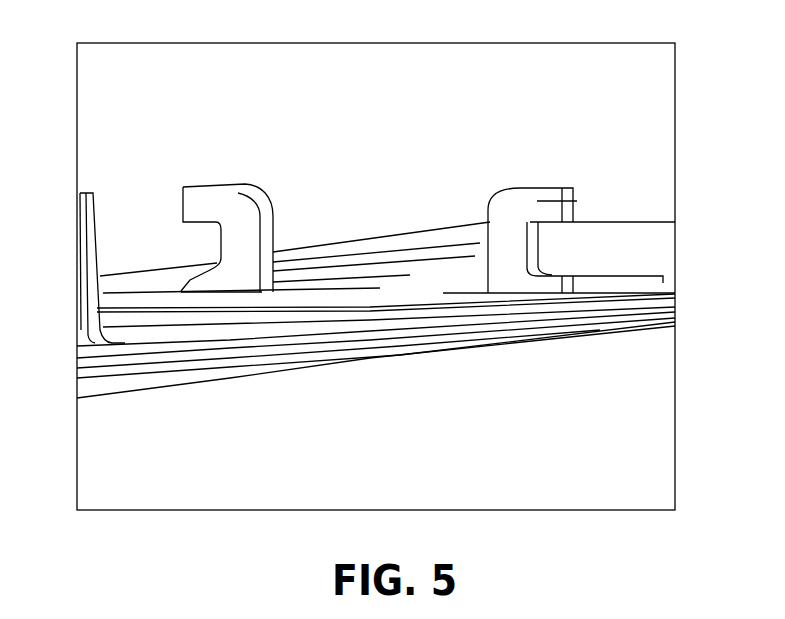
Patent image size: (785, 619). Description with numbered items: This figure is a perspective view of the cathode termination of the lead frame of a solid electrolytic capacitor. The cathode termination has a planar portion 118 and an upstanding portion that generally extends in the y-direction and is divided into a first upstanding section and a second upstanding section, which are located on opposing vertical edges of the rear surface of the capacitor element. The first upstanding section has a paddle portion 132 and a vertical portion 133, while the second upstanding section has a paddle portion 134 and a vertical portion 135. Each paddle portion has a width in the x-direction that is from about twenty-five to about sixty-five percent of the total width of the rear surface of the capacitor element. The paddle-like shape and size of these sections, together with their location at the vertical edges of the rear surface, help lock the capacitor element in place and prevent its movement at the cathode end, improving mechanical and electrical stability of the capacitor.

The planar portion 118 is at (502, 327).
The paddle portion 132 is at (197, 203).
The vertical portion 133 is at (243, 247).
The paddle portion 134 is at (577, 199).
The vertical portion 135 is at (507, 245).